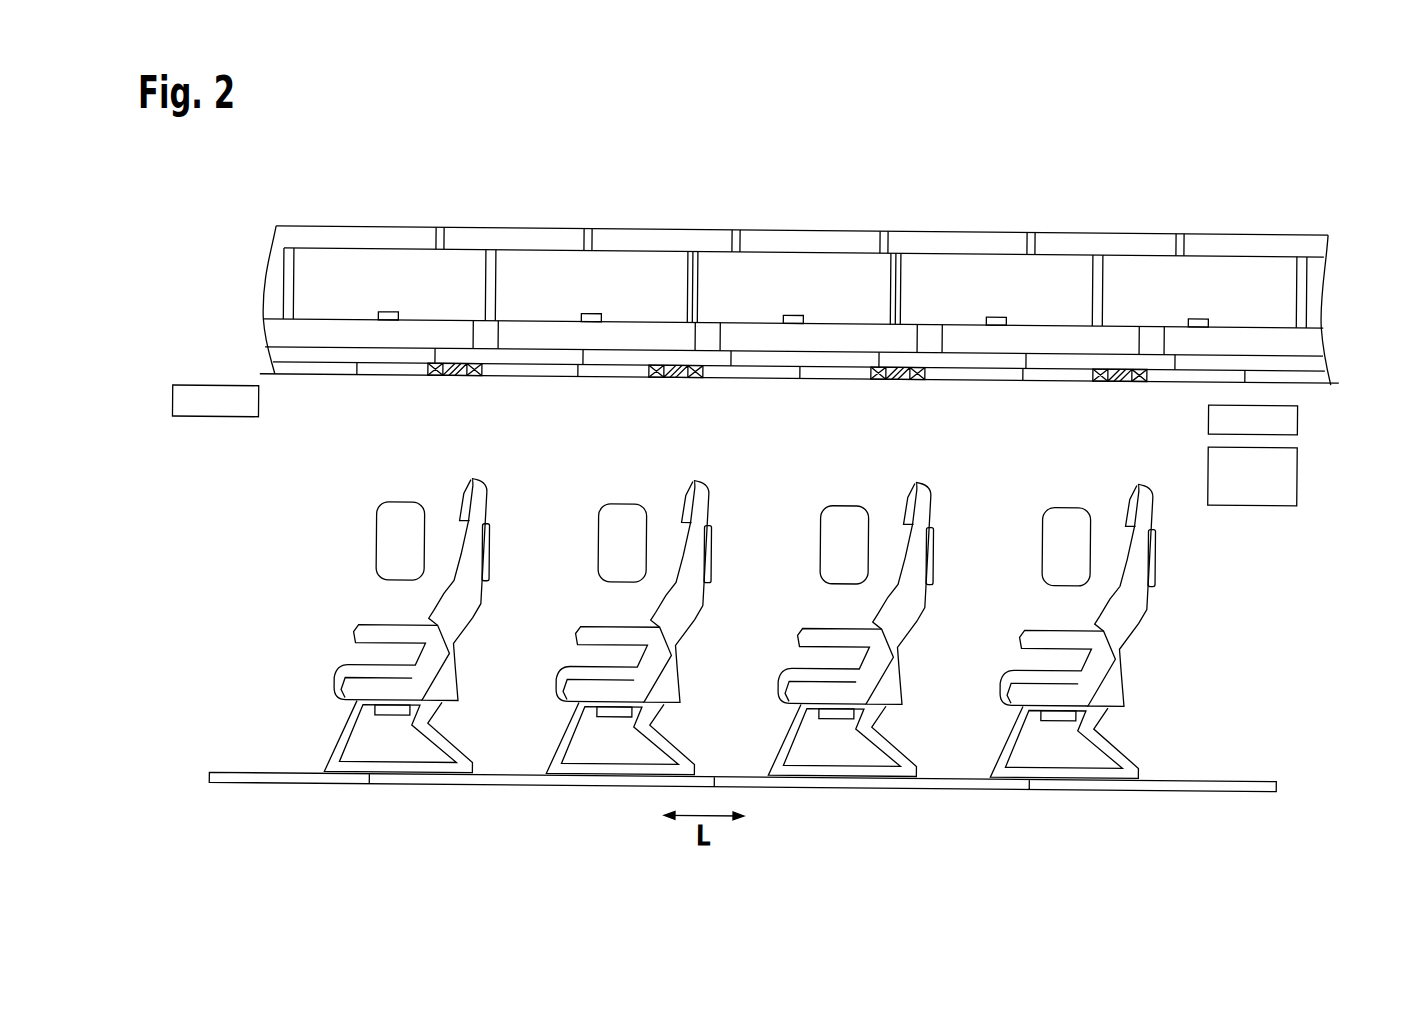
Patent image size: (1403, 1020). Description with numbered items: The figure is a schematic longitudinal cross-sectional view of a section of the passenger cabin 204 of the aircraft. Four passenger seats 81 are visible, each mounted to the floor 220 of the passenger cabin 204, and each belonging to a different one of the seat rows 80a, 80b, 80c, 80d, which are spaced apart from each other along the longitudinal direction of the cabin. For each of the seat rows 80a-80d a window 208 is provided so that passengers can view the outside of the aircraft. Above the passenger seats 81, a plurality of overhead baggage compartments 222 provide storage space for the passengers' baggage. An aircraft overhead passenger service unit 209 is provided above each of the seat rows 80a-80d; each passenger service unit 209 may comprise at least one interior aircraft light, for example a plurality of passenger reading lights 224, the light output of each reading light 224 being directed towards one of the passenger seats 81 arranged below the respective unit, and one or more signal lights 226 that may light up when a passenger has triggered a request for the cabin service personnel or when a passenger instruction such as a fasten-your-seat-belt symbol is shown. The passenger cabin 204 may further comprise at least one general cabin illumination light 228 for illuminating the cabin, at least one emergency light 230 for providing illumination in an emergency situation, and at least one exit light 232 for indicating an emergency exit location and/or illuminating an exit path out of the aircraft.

The passenger cabin 204 is at (677, 581).
The seat row 80a is at (358, 602).
The seat row 80b is at (580, 602).
The seat row 80c is at (802, 602).
The seat row 80d is at (1024, 602).
The passenger seat 81 is at (479, 465).
The window 208 is at (1048, 525).
The aircraft overhead passenger service unit 209 is at (445, 392).
The floor 220 is at (1228, 783).
The overhead baggage compartment 222 is at (1198, 272).
The passenger reading light 224 is at (1128, 368).
The signal light 226 is at (1100, 380).
The general cabin illumination light 228 is at (1247, 480).
The emergency light 230 is at (1276, 408).
The exit light 232 is at (202, 400).